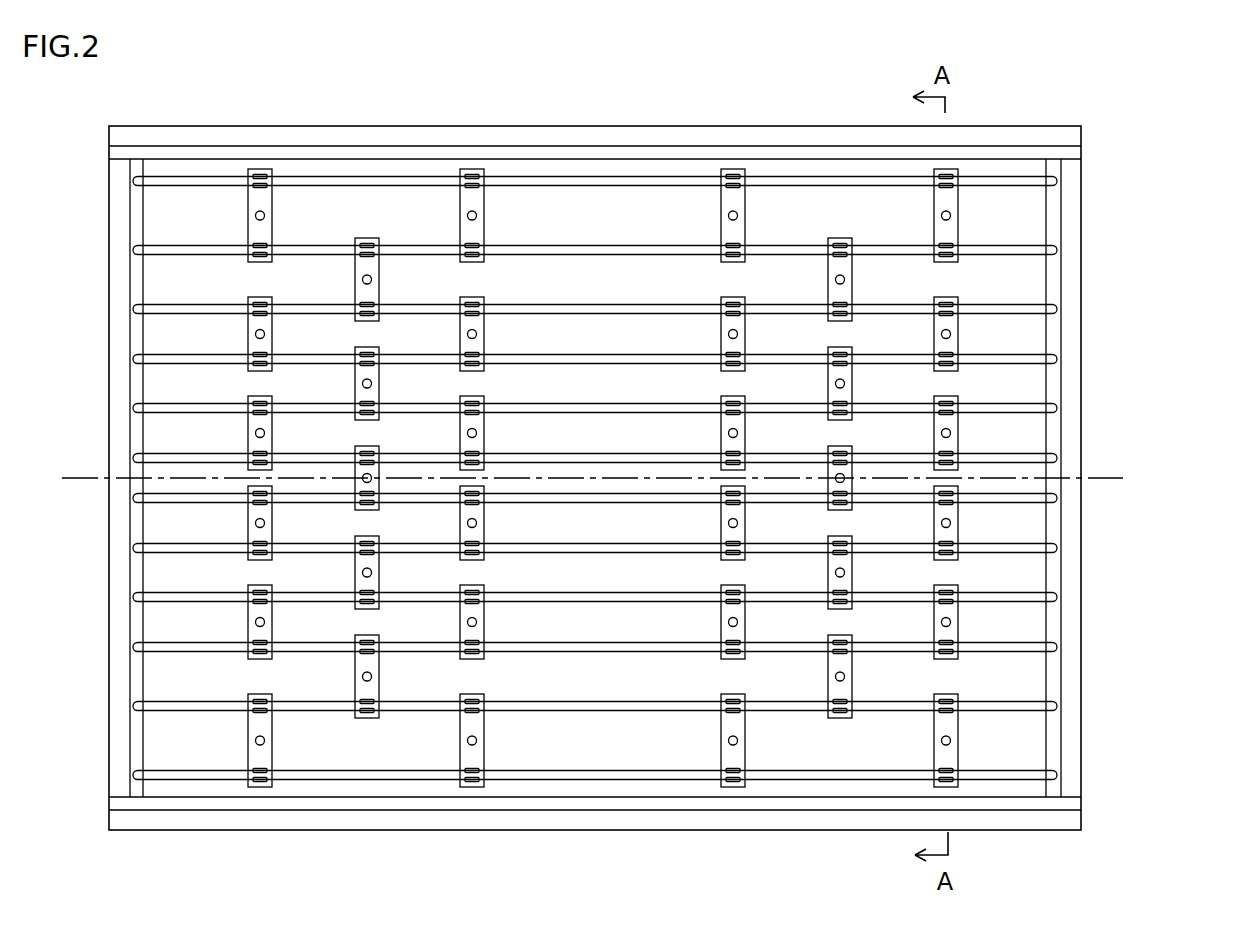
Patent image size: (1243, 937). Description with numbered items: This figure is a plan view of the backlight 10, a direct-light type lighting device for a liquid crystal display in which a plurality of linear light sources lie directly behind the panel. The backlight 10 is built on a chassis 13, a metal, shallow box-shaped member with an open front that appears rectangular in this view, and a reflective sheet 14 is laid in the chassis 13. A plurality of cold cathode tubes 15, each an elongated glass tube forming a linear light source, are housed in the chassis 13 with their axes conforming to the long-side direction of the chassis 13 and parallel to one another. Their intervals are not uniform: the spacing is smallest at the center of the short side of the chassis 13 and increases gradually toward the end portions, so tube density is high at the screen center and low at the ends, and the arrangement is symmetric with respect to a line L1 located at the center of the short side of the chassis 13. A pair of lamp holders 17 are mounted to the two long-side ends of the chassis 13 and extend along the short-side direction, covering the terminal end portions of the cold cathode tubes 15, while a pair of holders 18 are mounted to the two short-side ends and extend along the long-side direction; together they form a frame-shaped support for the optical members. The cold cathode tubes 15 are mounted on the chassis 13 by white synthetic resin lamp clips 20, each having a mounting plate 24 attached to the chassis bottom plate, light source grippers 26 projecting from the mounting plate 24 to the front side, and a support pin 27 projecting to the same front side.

The backlight 10 is at (1164, 375).
The chassis 13 is at (1085, 812).
The reflective sheet 14 is at (595, 414).
The cold cathode tube 15 is at (673, 247).
The lamp holder 17 is at (118, 450).
The holder 18 is at (567, 135).
The lamp clip 20 is at (604, 481).
The mounting plate 24 is at (249, 610).
The light source gripper 26 is at (262, 700).
The support pin 27 is at (840, 382).
The line L1 is at (1103, 475).